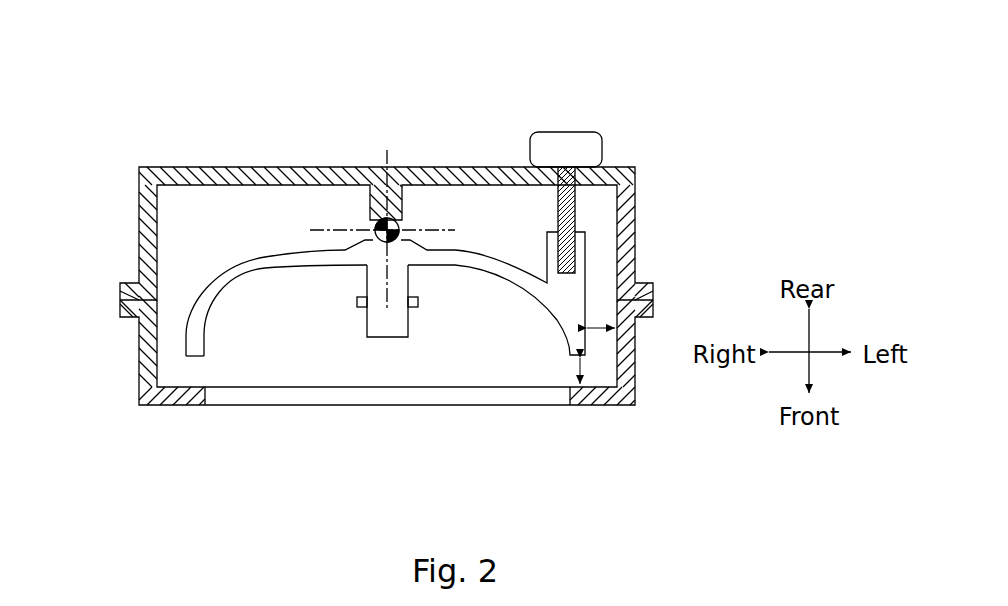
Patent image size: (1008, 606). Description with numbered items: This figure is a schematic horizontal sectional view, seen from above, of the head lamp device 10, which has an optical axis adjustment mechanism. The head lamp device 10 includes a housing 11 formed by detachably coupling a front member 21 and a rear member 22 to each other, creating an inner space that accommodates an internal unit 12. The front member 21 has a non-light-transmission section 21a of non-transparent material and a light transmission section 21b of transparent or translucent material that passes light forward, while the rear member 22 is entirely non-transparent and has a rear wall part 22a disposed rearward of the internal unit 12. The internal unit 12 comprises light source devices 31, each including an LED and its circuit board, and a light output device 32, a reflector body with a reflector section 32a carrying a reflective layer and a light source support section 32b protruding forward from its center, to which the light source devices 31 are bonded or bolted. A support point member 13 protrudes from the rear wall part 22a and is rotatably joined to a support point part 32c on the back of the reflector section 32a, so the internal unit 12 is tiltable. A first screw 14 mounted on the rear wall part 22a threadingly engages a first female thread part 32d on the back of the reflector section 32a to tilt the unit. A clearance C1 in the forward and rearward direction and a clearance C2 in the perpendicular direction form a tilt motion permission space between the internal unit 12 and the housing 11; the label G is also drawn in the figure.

The head lamp device 10 is at (115, 111).
The housing 11 is at (65, 207).
The internal unit 12 is at (505, 312).
The support point member 13 is at (366, 202).
The first screw 14 is at (576, 131).
The front member 21 is at (138, 352).
The non-light-transmission section 21a is at (161, 407).
The light transmission section 21b is at (286, 398).
The rear member 22 is at (138, 226).
The rear wall part 22a is at (215, 167).
The light source devices 31 is at (356, 306).
The light output device 32 is at (562, 331).
The reflector section 32a is at (236, 304).
The light source support section 32b is at (390, 338).
The support point part 32c is at (372, 228).
The first female thread part 32d is at (583, 248).
The center of gravity G is at (406, 214).
The clearance C1 is at (596, 371).
The clearance C2 is at (601, 313).